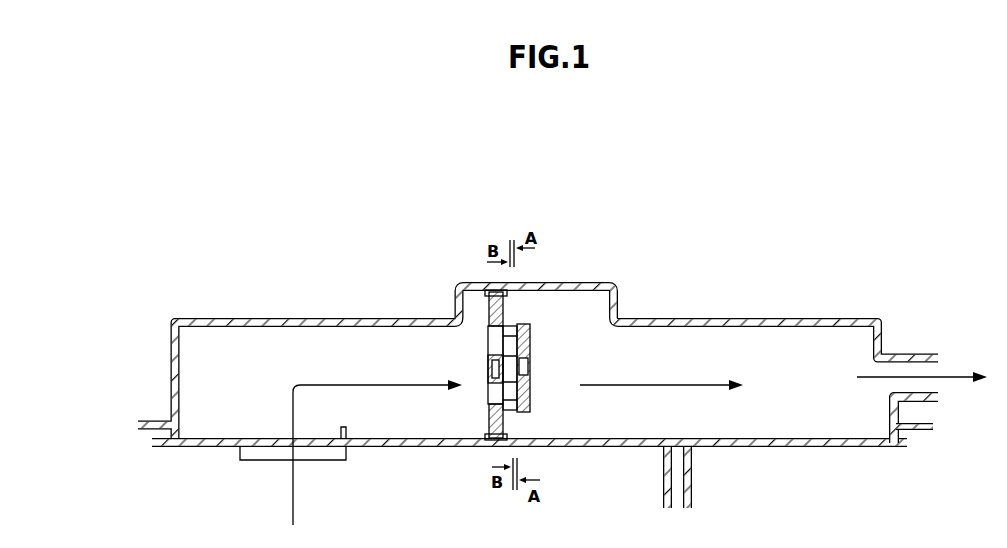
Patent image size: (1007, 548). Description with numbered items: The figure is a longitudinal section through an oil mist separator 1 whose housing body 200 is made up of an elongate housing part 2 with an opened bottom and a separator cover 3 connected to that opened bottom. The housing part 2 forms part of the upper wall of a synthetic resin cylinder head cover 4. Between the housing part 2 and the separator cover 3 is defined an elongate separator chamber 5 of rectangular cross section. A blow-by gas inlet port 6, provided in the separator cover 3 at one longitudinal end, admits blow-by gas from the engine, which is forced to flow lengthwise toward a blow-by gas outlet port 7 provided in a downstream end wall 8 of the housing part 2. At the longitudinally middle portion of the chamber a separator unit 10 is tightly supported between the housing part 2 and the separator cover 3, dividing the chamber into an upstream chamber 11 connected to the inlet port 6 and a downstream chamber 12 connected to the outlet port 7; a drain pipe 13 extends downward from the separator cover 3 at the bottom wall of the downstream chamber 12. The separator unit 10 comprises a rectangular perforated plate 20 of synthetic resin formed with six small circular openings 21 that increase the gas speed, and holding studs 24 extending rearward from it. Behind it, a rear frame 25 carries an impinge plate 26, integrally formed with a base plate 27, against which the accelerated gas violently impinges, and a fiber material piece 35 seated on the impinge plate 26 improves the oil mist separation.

The oil mist separator 1 is at (632, 198).
The elongate housing part 2 is at (229, 317).
The separator cover 3 is at (835, 440).
The cylinder head cover 4 is at (150, 420).
The elongate separator chamber 5 is at (281, 350).
The blow-by gas inlet port 6 is at (243, 448).
The blow-by gas outlet port 7 is at (921, 353).
The downstream end wall 8 is at (905, 425).
The separator unit 10 is at (468, 186).
The upstream chamber 11 is at (368, 350).
The downstream chamber 12 is at (748, 343).
The drain pipe 13 is at (665, 467).
The rectangular perforated plate 20 is at (489, 312).
The small circular openings 21 is at (490, 420).
The holding studs 24 is at (497, 436).
The rear frame 25 is at (530, 322).
The impinge plate 26 is at (529, 328).
The base plate 27 is at (525, 312).
The fiber material piece 35 is at (519, 428).
The housing body 200 is at (842, 246).